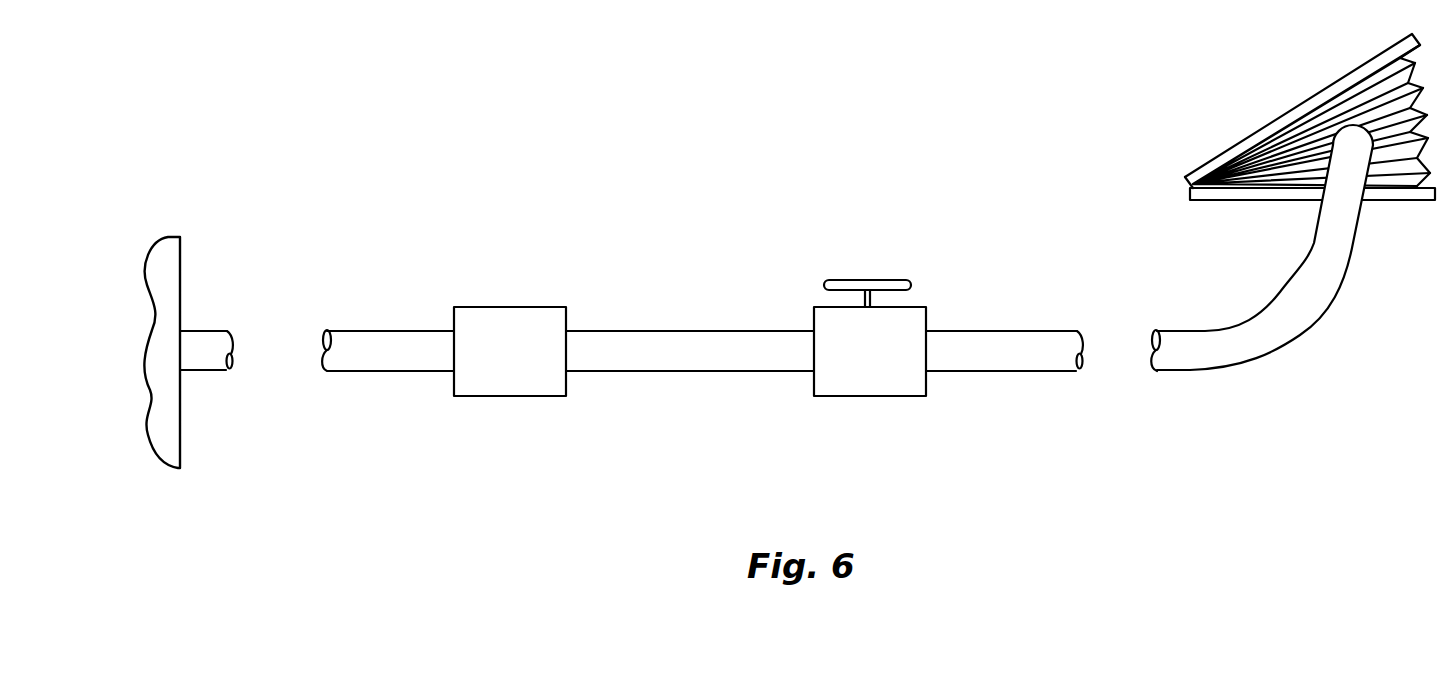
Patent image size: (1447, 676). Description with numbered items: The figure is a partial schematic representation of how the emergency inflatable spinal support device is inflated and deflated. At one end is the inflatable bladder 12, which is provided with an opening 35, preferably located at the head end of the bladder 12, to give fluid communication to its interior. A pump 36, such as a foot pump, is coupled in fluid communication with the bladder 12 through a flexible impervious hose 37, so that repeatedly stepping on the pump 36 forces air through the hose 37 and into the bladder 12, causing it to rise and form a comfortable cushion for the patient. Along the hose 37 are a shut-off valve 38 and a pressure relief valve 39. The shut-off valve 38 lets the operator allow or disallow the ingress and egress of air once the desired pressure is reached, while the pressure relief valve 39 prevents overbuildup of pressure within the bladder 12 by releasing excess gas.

The inflatable bladder 12 is at (170, 262).
The opening 35 is at (185, 328).
The pump 36 is at (1268, 130).
The flexible impervious hose 37 is at (333, 363).
The shut-off valve 38 is at (917, 318).
The pressure relief valve 39 is at (535, 317).